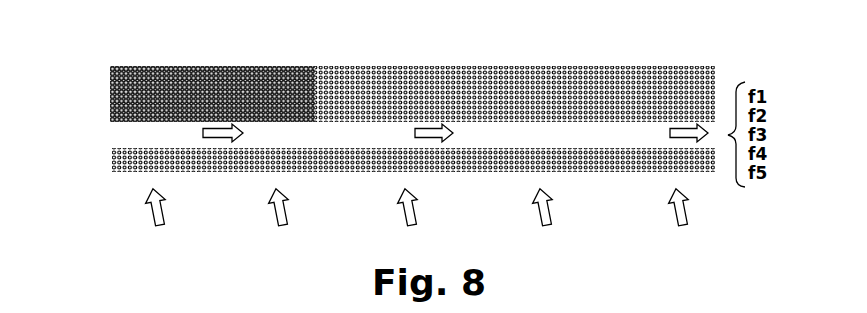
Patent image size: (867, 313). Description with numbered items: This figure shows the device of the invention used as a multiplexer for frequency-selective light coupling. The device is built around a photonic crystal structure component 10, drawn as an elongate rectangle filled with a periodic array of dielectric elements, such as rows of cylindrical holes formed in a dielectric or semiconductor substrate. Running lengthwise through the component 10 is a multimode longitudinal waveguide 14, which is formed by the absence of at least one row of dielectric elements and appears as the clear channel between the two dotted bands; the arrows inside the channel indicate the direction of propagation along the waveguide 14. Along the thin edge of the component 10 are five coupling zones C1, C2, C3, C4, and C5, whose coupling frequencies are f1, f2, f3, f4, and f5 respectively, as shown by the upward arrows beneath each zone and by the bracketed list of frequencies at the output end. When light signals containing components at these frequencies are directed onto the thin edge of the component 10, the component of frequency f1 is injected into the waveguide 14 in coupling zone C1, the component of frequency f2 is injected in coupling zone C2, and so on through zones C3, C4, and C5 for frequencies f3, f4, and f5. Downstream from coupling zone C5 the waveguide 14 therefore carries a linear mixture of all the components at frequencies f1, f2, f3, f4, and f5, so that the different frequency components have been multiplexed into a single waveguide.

The photonic crystal structure component 10 is at (532, 60).
The multimode longitudinal waveguide 14 is at (125, 128).
The coupling zone C1 is at (132, 170).
The coupling zone C2 is at (227, 170).
The coupling zone C3 is at (375, 170).
The coupling zone C4 is at (498, 170).
The coupling zone C5 is at (648, 170).
The coupling frequency f1 is at (157, 220).
The coupling frequency f2 is at (280, 220).
The coupling frequency f3 is at (408, 220).
The coupling frequency f4 is at (544, 220).
The coupling frequency f5 is at (680, 220).